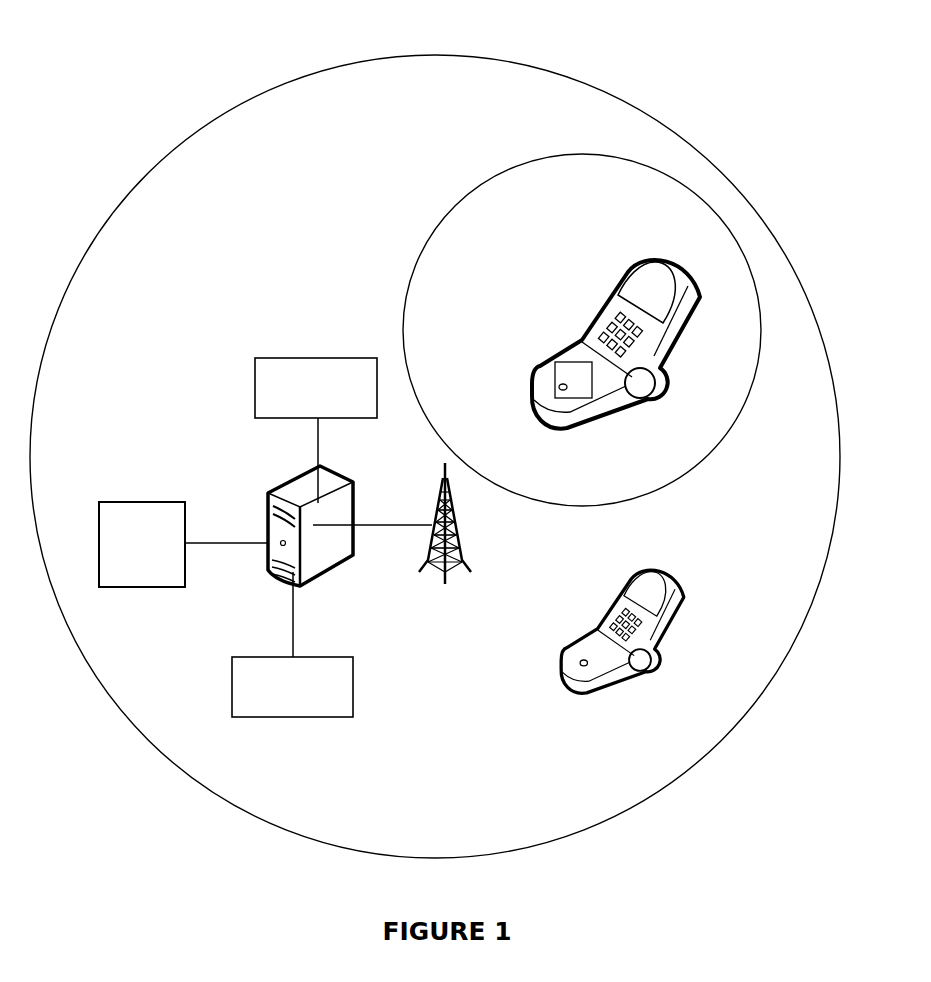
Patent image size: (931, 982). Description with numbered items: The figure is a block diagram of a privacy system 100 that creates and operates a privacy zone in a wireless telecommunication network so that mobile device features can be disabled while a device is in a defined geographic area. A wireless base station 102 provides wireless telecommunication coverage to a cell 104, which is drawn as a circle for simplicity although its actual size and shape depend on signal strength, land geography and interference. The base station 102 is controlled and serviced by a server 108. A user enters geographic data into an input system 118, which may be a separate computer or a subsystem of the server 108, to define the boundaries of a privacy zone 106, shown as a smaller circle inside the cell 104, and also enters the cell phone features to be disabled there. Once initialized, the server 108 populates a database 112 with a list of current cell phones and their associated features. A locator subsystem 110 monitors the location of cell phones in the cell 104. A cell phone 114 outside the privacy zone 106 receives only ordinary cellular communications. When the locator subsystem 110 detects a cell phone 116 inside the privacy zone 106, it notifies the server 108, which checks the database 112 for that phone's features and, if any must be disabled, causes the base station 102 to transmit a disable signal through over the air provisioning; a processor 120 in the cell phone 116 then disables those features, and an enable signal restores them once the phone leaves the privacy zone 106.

The privacy system 100 is at (206, 61).
The wireless base station 102 is at (414, 531).
The cell 104 is at (435, 456).
The privacy zone 106 is at (584, 330).
The server 108 is at (300, 539).
The locator subsystem 110 is at (316, 430).
The database 112 is at (160, 536).
The cell phone 114 is at (606, 631).
The cell phone 116 is at (603, 344).
The input system 118 is at (292, 644).
The processor 120 is at (549, 369).